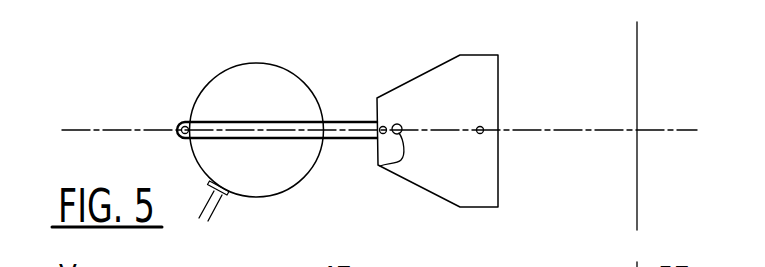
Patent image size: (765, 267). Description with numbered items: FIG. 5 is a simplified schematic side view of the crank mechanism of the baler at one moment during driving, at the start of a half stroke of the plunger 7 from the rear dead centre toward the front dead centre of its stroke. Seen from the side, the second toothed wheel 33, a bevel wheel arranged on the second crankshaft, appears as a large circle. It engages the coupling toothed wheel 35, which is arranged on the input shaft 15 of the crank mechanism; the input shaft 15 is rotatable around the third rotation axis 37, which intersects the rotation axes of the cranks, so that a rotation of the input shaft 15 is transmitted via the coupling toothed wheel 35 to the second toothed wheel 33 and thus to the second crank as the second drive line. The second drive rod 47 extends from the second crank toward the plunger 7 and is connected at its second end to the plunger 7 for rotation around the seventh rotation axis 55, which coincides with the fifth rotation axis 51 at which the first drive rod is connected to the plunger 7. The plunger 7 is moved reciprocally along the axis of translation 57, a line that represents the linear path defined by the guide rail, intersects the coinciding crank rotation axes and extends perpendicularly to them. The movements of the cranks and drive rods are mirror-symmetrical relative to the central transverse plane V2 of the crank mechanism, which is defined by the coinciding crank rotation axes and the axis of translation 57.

The central transverse plane V2 is at (111, 128).
The plunger 7 is at (430, 90).
The input shaft 15 is at (193, 184).
The second toothed wheel 33 is at (260, 82).
The coupling toothed wheel 35 is at (227, 193).
The third rotation axis 37 is at (196, 228).
The second drive rod 47 is at (353, 123).
The fifth rotation axis 51 is at (373, 177).
The seventh rotation axis 55 is at (397, 129).
The axis of translation 57 is at (680, 129).